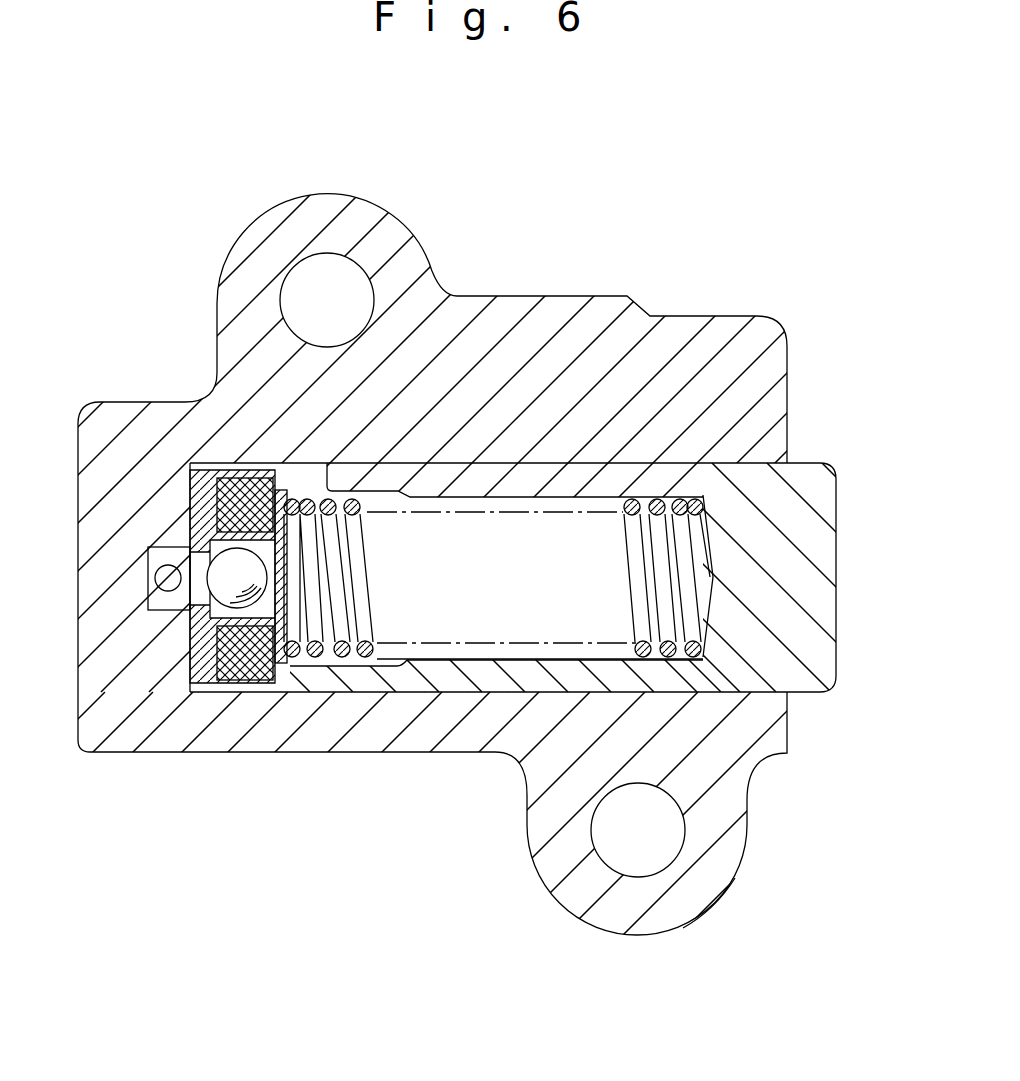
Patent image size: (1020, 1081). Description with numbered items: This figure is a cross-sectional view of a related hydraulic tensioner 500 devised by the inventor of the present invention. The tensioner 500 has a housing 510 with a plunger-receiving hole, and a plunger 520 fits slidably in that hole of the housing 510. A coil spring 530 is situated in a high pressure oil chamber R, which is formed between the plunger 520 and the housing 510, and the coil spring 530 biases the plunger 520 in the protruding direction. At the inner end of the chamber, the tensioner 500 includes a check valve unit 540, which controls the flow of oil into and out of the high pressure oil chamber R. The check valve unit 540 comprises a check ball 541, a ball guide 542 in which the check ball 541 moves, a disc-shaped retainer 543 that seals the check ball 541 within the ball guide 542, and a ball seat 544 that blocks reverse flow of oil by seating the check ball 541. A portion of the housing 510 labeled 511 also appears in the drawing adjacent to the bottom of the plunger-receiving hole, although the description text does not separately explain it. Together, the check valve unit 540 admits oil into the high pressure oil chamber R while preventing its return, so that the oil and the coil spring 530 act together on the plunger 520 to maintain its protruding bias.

The tensioner 500 is at (524, 213).
The housing 510 is at (712, 762).
The housing bottom step 511 is at (372, 688).
The plunger 520 is at (790, 597).
The coil spring 530 is at (357, 502).
The check valve unit 540 is at (335, 802).
The check ball 541 is at (196, 640).
The ball guide 542 is at (250, 657).
The disc-shaped retainer 543 is at (279, 650).
The ball seat 544 is at (210, 582).
The high pressure oil chamber R is at (500, 589).